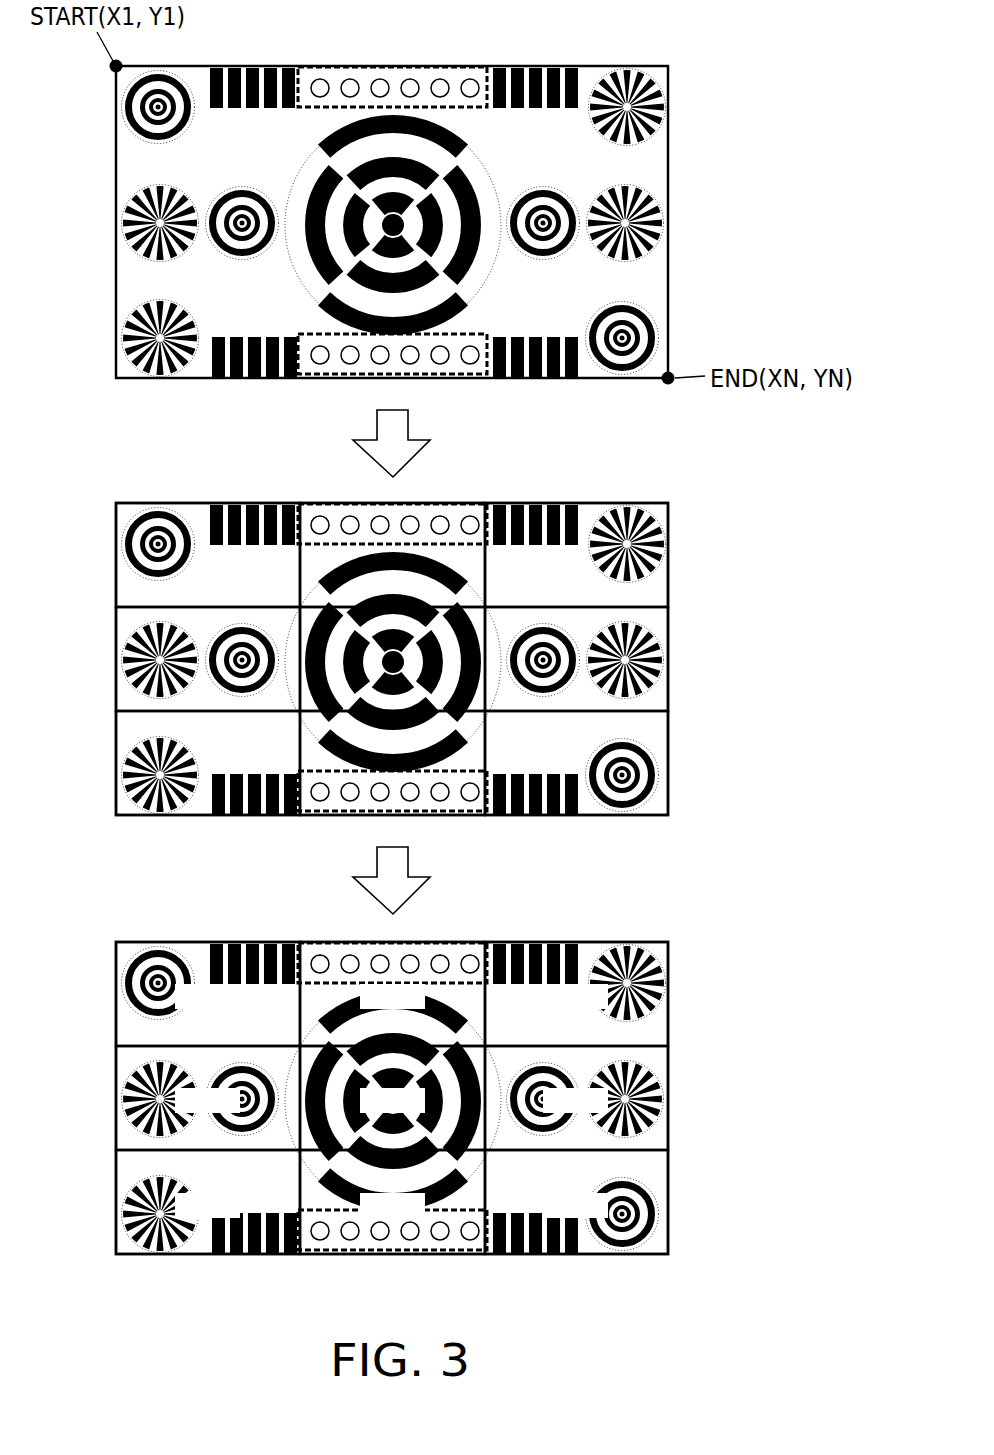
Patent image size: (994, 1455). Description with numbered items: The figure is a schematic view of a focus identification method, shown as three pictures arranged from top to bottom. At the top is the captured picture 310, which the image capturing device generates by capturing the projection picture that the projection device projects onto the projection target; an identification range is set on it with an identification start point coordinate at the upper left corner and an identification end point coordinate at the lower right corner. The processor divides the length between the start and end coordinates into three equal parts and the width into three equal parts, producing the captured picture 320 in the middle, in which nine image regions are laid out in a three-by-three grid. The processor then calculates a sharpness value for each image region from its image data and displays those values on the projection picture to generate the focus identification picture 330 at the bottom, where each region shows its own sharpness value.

The captured picture 310 is at (608, 66).
The captured picture 320 is at (608, 503).
The focus identification picture 330 is at (608, 942).